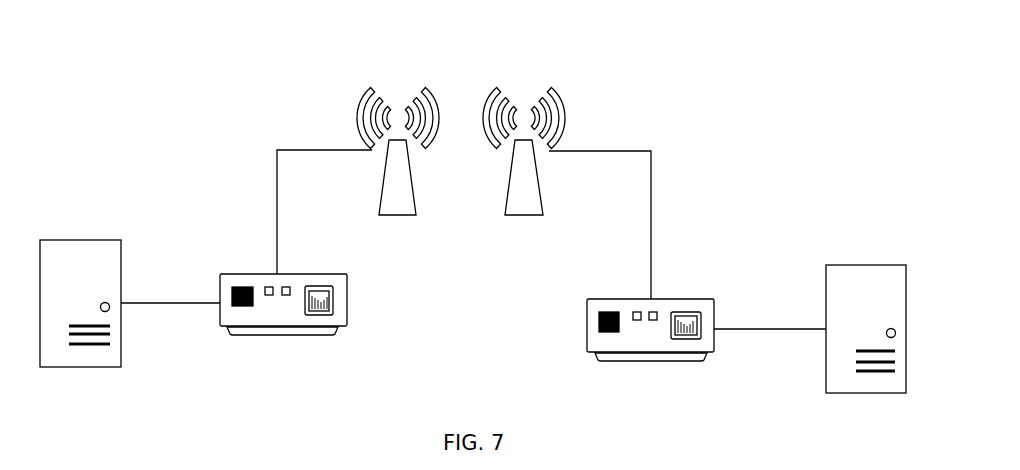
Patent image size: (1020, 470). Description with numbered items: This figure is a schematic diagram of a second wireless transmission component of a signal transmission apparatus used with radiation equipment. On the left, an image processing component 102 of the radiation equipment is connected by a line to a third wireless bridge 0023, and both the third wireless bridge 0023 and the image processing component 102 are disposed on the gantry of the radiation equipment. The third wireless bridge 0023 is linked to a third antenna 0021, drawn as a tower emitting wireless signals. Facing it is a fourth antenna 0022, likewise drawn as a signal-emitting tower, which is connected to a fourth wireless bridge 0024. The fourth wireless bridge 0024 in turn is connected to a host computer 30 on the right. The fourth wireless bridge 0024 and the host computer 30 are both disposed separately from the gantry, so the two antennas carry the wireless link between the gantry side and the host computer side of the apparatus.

The image processing component 102 is at (80, 238).
The host computer 30 is at (873, 263).
The third antenna 0021 is at (357, 103).
The fourth antenna 0022 is at (557, 88).
The third wireless bridge 0023 is at (250, 270).
The fourth wireless bridge 0024 is at (700, 297).